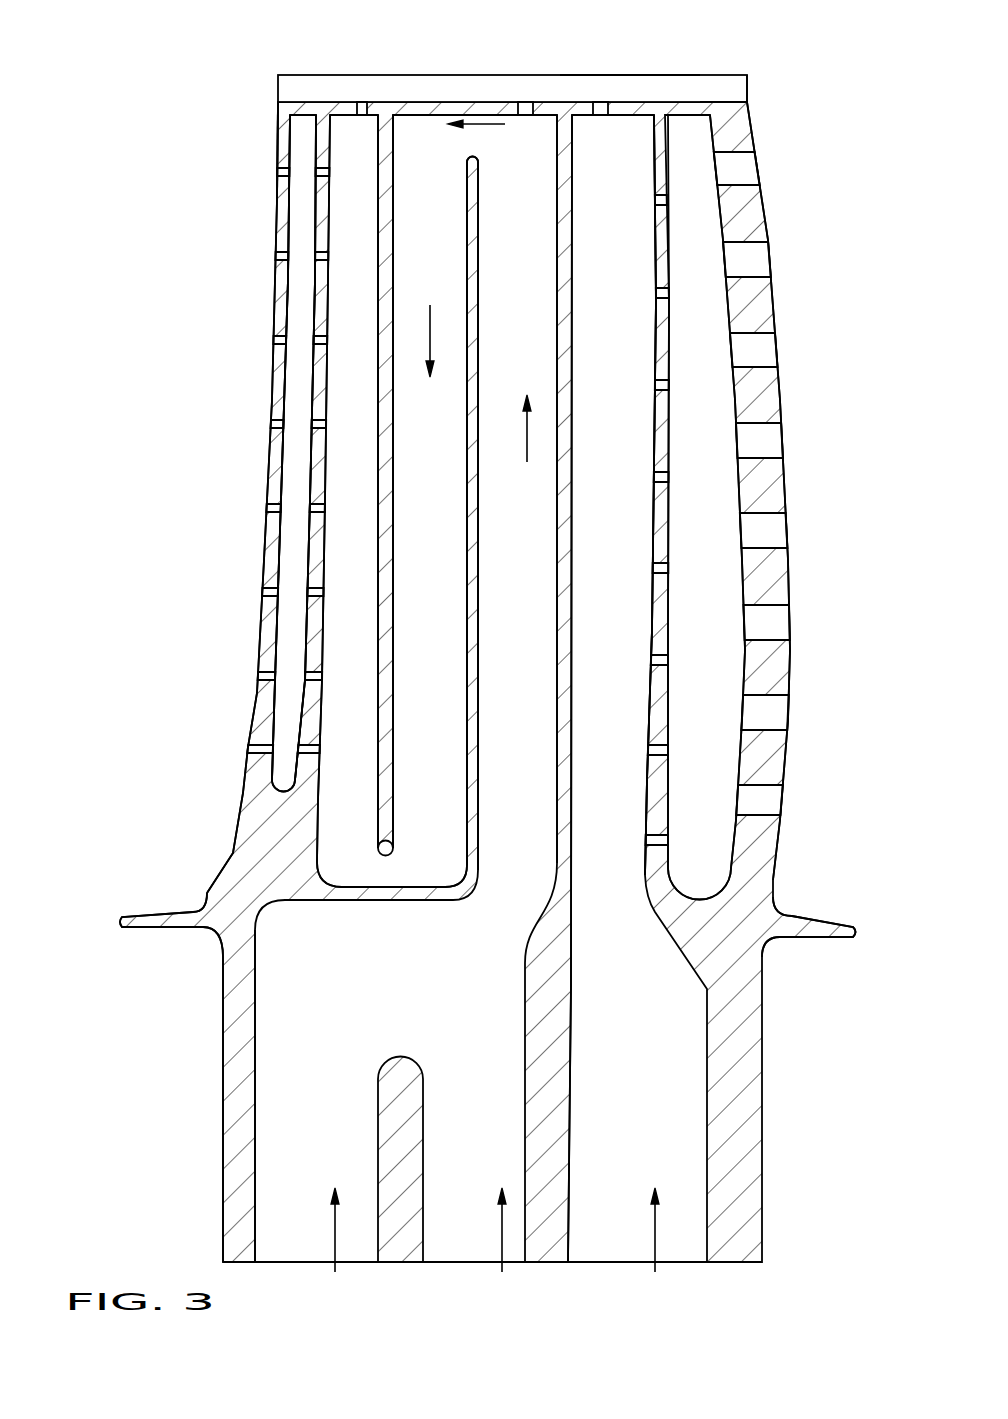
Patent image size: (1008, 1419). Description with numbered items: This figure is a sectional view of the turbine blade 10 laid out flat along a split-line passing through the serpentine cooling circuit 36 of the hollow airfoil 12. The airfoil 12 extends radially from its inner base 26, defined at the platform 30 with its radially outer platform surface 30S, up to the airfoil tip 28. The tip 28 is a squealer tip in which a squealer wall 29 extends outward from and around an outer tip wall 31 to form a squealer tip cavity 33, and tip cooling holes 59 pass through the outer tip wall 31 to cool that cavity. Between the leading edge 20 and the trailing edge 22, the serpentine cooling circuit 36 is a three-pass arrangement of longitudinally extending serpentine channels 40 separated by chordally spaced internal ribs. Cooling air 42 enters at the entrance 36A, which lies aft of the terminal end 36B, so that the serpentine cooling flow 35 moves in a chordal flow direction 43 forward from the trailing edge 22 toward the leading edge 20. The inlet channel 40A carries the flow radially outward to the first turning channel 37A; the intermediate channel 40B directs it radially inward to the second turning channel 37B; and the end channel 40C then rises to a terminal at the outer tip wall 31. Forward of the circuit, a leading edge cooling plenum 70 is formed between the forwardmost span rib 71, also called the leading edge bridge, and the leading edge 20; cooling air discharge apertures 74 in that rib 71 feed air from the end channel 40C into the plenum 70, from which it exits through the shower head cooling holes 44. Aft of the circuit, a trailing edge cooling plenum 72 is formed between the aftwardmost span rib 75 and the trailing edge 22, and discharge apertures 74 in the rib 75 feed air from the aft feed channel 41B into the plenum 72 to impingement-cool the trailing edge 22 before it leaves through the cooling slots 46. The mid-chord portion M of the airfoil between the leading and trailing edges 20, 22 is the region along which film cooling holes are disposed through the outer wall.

The turbine blade 10 is at (815, 1303).
The airfoil 12 is at (779, 198).
The leading edge 20 is at (270, 460).
The trailing edge 22 is at (786, 482).
The base 26 is at (207, 877).
The airfoil tip 28 is at (277, 128).
The squealer wall 29 is at (753, 88).
The platform 30 is at (140, 910).
The radially outer platform surface 30S is at (185, 910).
The outer tip wall 31 is at (705, 98).
The squealer tip cavity 33 is at (616, 85).
The serpentine cooling flow 35 is at (533, 447).
The serpentine cooling circuit 36 is at (428, 477).
The entrance 36A is at (542, 893).
The terminal end 36B is at (378, 155).
The first turning channel 37A is at (455, 153).
The second turning channel 37B is at (407, 886).
The serpentine channels 40 is at (432, 201).
The inlet channel 40A is at (408, 275).
The intermediate channel 40B is at (450, 448).
The end channel 40C is at (372, 733).
The aft feed channel 41B is at (630, 846).
The cooling air 42 is at (333, 1232).
The chordal flow direction 43 is at (485, 126).
The leading edge film cooling holes 44 is at (262, 740).
The cooling slots 46 is at (768, 458).
The tip cooling holes 59 is at (362, 102).
The leading edge cooling plenum 70 is at (290, 627).
The forwardmost span rib 71 is at (317, 624).
The trailing edge cooling plenum 72 is at (725, 735).
The cooling air discharge apertures 74 is at (313, 748).
The aftwardmost span rib 75 is at (660, 527).
The mid-chord portion M is at (592, 50).